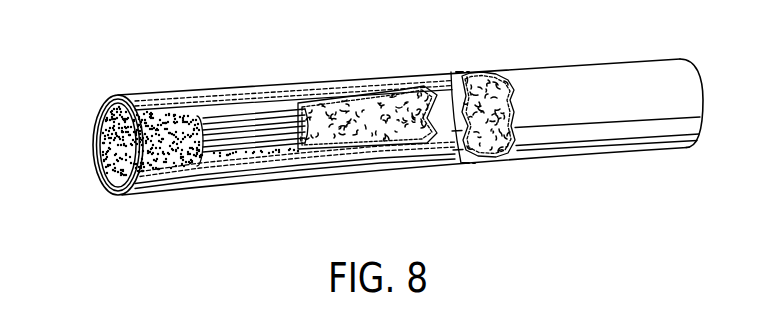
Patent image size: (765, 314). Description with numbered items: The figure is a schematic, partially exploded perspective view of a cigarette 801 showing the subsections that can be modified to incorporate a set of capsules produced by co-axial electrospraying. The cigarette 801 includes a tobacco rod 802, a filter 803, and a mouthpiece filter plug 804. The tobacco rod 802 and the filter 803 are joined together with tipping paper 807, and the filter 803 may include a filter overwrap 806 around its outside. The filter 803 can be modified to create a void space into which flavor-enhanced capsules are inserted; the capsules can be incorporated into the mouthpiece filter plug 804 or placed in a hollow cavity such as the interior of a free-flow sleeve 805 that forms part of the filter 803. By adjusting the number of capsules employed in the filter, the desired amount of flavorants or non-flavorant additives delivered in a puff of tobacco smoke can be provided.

The cigarette 801 is at (293, 68).
The tobacco rod 802 is at (590, 72).
The filter 803 is at (187, 88).
The mouthpiece filter plug 804 is at (99, 107).
The free-flow sleeve 805 is at (277, 150).
The filter overwrap 806 is at (113, 187).
The tipping paper 807 is at (375, 88).